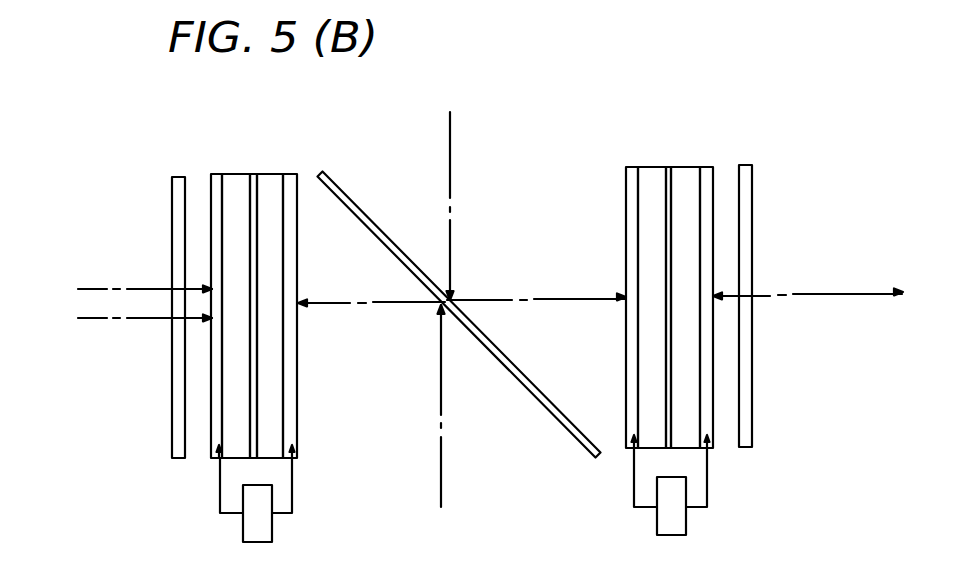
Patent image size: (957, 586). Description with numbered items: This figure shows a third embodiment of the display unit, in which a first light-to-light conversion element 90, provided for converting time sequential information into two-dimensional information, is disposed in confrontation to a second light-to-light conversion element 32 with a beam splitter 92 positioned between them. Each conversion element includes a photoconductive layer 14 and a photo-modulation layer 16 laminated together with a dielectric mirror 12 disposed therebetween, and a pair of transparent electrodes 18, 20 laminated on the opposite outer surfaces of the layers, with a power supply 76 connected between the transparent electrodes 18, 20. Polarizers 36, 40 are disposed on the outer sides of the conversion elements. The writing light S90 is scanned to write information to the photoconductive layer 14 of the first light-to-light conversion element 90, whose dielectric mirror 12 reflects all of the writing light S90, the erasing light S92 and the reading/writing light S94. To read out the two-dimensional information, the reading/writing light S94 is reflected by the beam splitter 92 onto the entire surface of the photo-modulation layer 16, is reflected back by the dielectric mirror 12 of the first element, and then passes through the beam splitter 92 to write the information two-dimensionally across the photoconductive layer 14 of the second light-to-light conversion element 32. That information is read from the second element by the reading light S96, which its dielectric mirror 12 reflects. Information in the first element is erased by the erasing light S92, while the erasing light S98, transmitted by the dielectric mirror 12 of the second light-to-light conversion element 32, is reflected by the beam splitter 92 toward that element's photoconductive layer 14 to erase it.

The dielectric mirror 12 is at (255, 177).
The photoconductive layer 14 is at (231, 185).
The photo-modulation layer 16 is at (270, 180).
The transparent electrode 18 is at (213, 203).
The transparent electrode 20 is at (293, 236).
The second light-to-light conversion element 32 is at (718, 165).
The polarizer 36 is at (172, 222).
The polarizer 40 is at (751, 192).
The power supply 76 is at (265, 528).
The first light-to-light conversion element 90 is at (205, 470).
The beam splitter 92 is at (552, 417).
The writing light S90 is at (87, 285).
The erasing light S92 is at (86, 331).
The reading/writing light S94 is at (442, 498).
The reading light S96 is at (770, 294).
The erasing light S98 is at (451, 135).